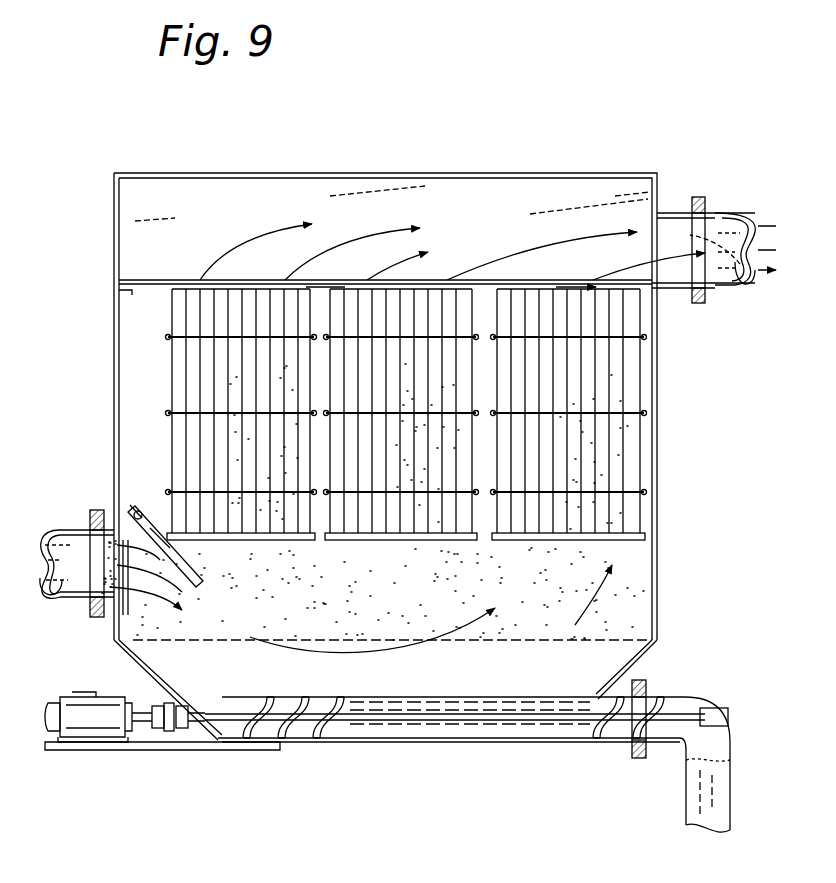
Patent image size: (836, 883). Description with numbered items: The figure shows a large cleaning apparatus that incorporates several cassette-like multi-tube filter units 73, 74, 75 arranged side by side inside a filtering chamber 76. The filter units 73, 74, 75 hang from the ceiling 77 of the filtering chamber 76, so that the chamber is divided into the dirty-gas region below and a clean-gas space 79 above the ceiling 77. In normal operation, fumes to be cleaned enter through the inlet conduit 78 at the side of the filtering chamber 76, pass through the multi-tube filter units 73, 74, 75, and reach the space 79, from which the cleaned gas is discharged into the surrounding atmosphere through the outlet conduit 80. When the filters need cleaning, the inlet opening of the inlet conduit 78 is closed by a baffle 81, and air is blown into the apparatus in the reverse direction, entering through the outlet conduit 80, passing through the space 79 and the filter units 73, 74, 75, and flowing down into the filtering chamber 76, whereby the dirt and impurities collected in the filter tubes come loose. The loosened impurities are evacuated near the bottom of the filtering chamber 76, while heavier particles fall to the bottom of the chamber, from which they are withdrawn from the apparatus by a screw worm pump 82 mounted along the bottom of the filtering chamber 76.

The multi-tube filter unit 73 is at (195, 373).
The multi-tube filter unit 74 is at (400, 523).
The multi-tube filter unit 75 is at (550, 523).
The filtering chamber 76 is at (478, 682).
The ceiling 77 is at (168, 288).
The inlet conduit 78 is at (63, 540).
The space 79 is at (175, 237).
The outlet conduit 80 is at (727, 276).
The baffle 81 is at (195, 581).
The screw worm pump 82 is at (295, 733).